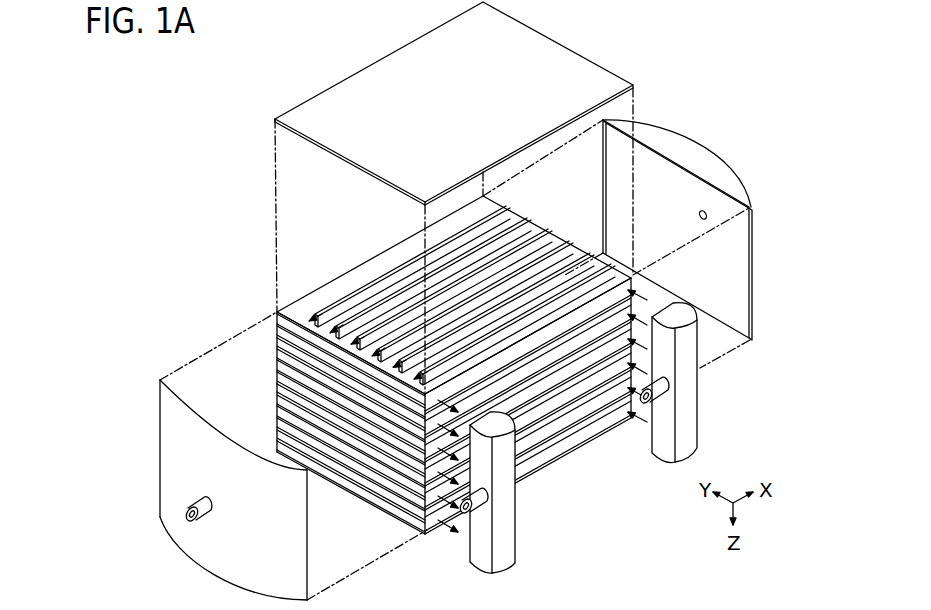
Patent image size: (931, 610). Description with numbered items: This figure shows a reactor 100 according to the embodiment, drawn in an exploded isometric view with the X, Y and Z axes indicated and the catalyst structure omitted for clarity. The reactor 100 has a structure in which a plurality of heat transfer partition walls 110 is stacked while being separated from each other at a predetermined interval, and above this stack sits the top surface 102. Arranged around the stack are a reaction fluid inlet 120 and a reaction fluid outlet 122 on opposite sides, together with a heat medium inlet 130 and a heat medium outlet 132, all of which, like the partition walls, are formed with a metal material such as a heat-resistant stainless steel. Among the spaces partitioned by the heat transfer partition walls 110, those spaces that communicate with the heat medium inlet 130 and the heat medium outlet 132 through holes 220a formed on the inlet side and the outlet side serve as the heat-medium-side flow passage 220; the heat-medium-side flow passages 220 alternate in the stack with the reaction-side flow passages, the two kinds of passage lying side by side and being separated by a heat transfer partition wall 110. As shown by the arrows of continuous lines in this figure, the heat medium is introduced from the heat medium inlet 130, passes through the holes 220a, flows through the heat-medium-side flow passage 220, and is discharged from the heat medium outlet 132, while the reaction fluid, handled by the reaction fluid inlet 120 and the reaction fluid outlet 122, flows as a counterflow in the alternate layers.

The reactor 100 is at (271, 77).
The top surface 102 is at (475, 114).
The heat transfer partition walls 110 is at (277, 332).
The reaction fluid inlet 120 is at (252, 550).
The reaction fluid outlet 122 is at (704, 158).
The heat medium inlet 130 is at (700, 428).
The heat medium outlet 132 is at (517, 548).
The heat-medium-side flow passage 220 is at (373, 470).
The holes 220a is at (432, 505).